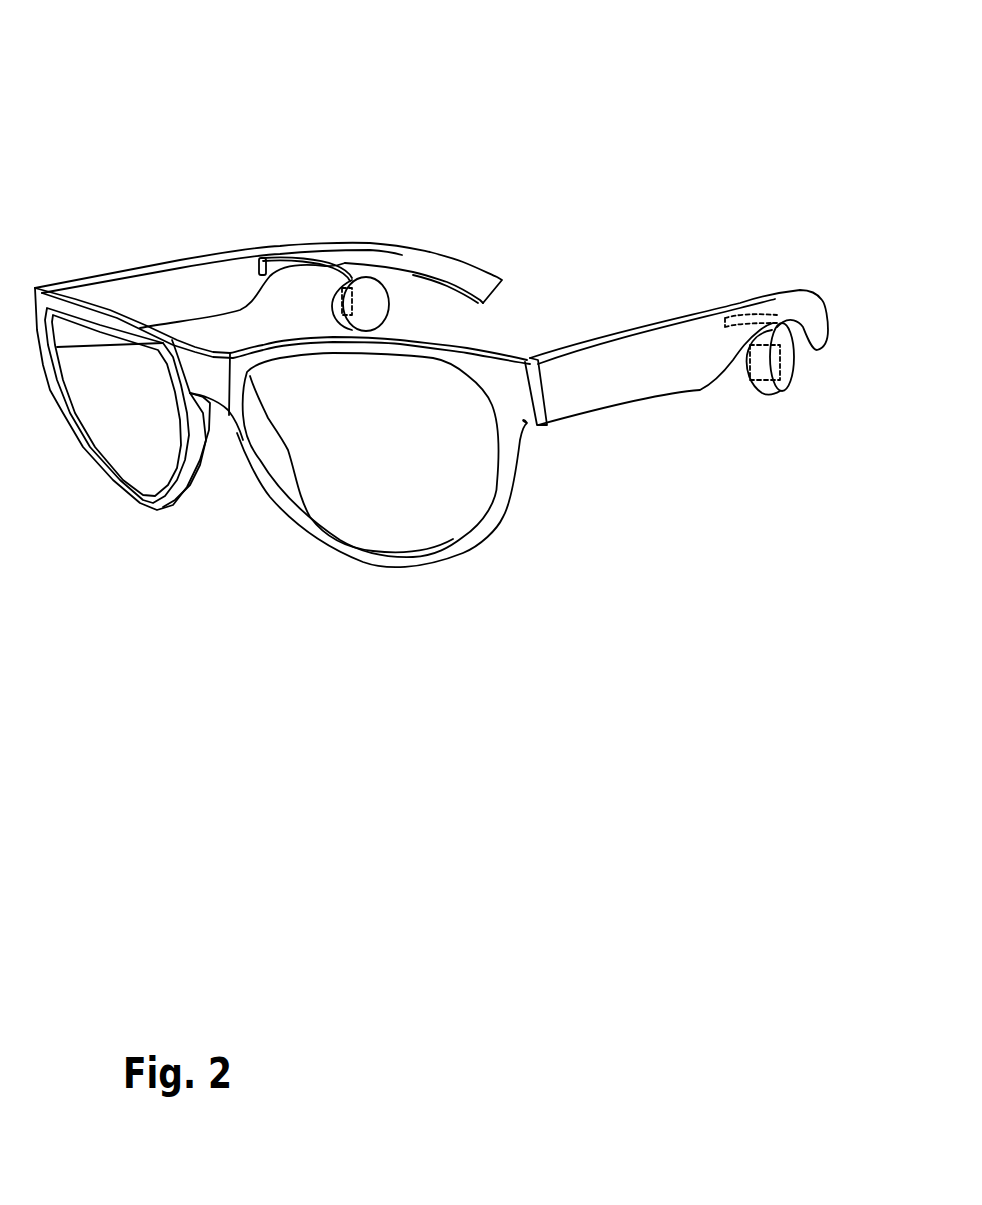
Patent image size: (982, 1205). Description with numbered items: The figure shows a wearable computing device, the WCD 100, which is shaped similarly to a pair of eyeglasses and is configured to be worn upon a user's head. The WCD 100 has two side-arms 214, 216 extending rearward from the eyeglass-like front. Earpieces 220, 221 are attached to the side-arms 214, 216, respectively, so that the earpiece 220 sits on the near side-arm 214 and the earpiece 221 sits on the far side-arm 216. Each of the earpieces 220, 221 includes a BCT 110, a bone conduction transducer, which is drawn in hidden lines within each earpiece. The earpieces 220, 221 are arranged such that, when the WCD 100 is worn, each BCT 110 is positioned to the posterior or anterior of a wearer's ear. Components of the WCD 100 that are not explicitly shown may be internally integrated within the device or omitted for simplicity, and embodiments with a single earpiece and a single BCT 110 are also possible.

The wearable computing device 100 is at (556, 74).
The BCT 110 is at (332, 308).
The side-arm 214 is at (685, 393).
The side-arm 216 is at (203, 270).
The earpiece 220 is at (785, 390).
The earpiece 221 is at (388, 308).